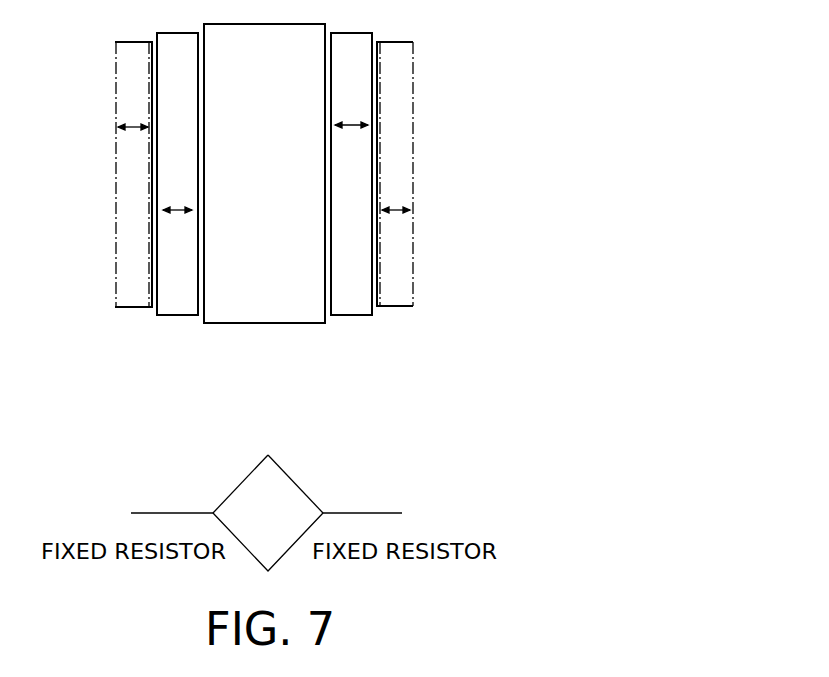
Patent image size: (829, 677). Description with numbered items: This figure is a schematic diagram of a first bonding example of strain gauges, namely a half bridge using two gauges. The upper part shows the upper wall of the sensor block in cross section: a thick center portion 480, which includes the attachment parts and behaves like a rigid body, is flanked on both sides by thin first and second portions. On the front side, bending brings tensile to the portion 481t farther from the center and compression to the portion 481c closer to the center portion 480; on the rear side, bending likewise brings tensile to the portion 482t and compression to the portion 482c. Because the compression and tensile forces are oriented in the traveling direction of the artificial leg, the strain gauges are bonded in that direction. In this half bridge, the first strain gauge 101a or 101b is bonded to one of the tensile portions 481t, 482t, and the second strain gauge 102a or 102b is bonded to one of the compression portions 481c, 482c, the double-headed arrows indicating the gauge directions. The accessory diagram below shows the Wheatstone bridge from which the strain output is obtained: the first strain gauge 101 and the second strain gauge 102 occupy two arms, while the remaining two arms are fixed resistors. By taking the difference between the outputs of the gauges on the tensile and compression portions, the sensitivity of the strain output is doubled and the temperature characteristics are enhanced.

The center portion 480 is at (240, 323).
The compression portion of second portion 482c is at (175, 316).
The tensile portion of second portion 482t is at (137, 308).
The compression portion of first portion 481c is at (348, 317).
The tensile portion of first portion 481t is at (415, 98).
The first strain gauge 101b is at (135, 130).
The second strain gauge 102b is at (178, 213).
The second strain gauge 102a is at (352, 130).
The first strain gauge 101a is at (392, 214).
The first strain gauge 101 is at (235, 483).
The second strain gauge 102 is at (304, 483).